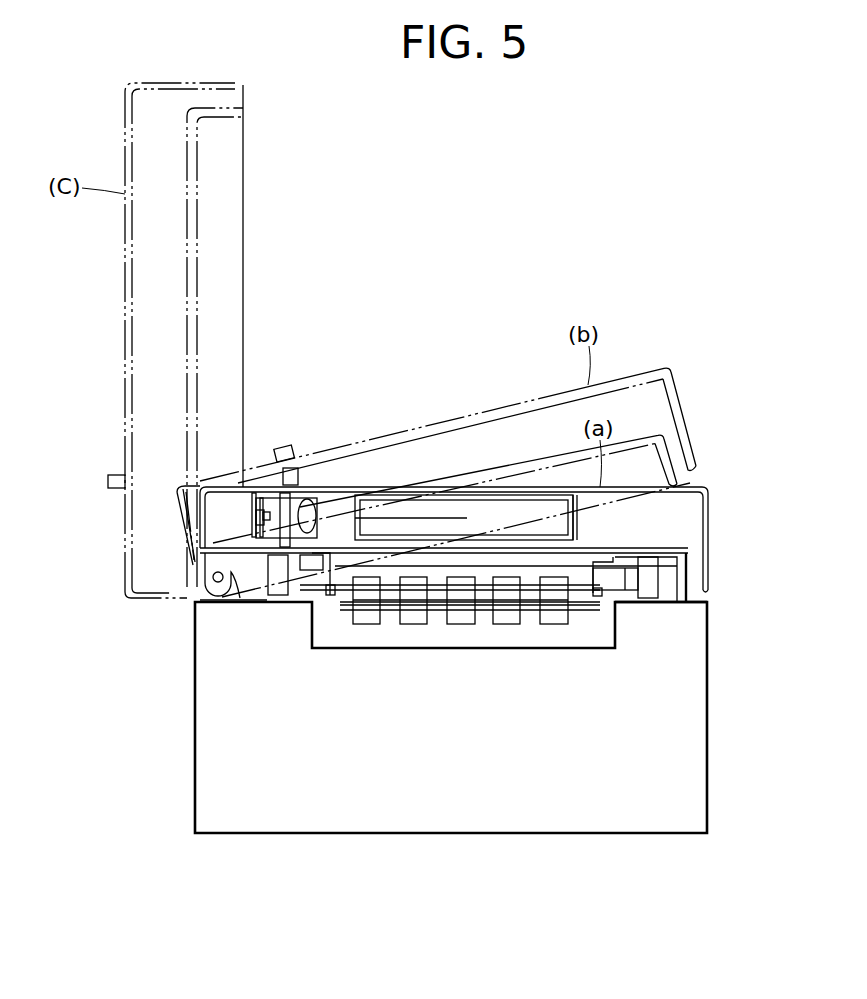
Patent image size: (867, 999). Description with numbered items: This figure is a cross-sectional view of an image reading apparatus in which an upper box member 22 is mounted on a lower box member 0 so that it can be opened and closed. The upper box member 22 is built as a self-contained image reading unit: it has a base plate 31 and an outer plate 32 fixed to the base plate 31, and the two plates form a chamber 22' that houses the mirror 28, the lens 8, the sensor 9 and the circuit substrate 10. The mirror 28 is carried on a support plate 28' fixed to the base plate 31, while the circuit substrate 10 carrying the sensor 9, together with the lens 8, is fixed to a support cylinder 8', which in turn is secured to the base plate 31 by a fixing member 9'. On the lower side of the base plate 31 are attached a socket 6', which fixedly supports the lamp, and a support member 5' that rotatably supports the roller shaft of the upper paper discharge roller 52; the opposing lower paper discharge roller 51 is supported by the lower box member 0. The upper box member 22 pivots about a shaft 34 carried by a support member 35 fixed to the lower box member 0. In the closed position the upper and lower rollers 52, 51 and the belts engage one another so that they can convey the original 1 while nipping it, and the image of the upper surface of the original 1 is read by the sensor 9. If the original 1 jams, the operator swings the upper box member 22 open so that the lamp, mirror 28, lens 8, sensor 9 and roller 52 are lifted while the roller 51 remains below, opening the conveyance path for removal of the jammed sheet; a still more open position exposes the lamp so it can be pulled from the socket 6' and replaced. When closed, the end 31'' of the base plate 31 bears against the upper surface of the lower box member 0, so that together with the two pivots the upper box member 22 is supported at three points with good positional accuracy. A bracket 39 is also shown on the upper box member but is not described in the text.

The lower box member 0 is at (503, 834).
The original 1 is at (525, 618).
The upper box member 22 is at (402, 340).
The chamber 22' is at (482, 537).
The outer plate 32 is at (710, 566).
The shaft 34 is at (213, 576).
The support member 35 is at (220, 599).
The latch bracket 39 is at (283, 470).
The lens 8 is at (308, 500).
The support cylinder 8' is at (303, 486).
The sensor 9 is at (240, 524).
The circuit substrate 10 is at (253, 500).
The fixing member 9' is at (264, 575).
The mirror 28 is at (496, 517).
The support plate 28' is at (504, 525).
The base plate 31 is at (651, 555).
The end of the base plate 31'' is at (664, 634).
The support member 5' is at (494, 602).
The socket 6' is at (466, 605).
The paper discharge roller 51 is at (440, 615).
The paper discharge roller 52 is at (430, 590).